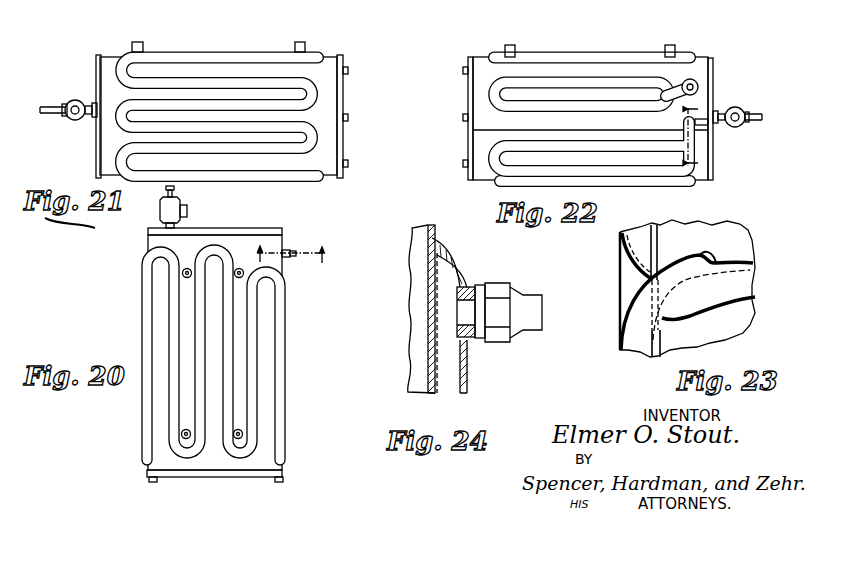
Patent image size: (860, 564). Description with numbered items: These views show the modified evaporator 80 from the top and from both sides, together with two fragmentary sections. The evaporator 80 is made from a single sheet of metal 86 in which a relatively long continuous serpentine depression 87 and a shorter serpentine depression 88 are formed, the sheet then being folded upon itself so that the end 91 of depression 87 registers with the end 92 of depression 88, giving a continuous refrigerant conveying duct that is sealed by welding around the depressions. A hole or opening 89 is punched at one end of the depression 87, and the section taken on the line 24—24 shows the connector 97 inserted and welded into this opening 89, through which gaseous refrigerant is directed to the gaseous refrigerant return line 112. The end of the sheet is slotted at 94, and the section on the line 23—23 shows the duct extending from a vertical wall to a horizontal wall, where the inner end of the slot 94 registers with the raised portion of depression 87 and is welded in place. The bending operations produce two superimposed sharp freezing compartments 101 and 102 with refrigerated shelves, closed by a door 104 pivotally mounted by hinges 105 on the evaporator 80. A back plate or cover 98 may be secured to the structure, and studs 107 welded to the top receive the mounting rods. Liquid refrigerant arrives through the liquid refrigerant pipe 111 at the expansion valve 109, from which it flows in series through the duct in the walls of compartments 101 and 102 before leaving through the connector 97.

In FIG. 22, the section line 23— 23 is at (675, 140).
In FIG. 20, the section line 24— 24 is at (291, 254).
In FIG. 21, the evaporator 80 is at (322, 68).
In FIG. 22, the evaporator 80 is at (553, 65).
In FIG. 20, the evaporator 80 is at (157, 312).
In FIG. 24, the plate or single sheet of metal 86 is at (425, 287).
In FIG. 21, the continuous serpentine depression 87 is at (248, 80).
In FIG. 22, the continuous serpentine depression 87 is at (622, 104).
In FIG. 20, the continuous serpentine depression 87 is at (172, 397).
In FIG. 24, the continuous serpentine depression 87 is at (455, 368).
In FIG. 23, the continuous serpentine depression 87 is at (622, 246).
In FIG. 23, the short continuous serpentine depression 88 is at (735, 285).
In FIG. 22, the hole or opening 89 is at (690, 79).
In FIG. 24, the hole or opening 89 is at (455, 276).
In FIG. 23, the end of depression 87 91 is at (687, 253).
In FIG. 23, the end of depression 88 92 is at (688, 325).
In FIG. 22, the slot 94 is at (700, 124).
In FIG. 23, the slot 94 is at (648, 305).
In FIG. 20, the connector 97 is at (293, 258).
In FIG. 24, the connector 97 is at (472, 286).
In FIG. 21, the back plate or cover 98 is at (97, 73).
In FIG. 22, the back plate or cover 98 is at (713, 80).
In FIG. 20, the back plate or cover 98 is at (215, 228).
In FIG. 23, the sharp freezing compartment 101 is at (732, 238).
In FIG. 23, the sharp freezing compartment 102 is at (742, 324).
In FIG. 21, the door 104 is at (343, 87).
In FIG. 22, the door 104 is at (468, 142).
In FIG. 20, the door 104 is at (233, 477).
In FIG. 21, the hinges 105 is at (347, 70).
In FIG. 22, the hinges 105 is at (466, 165).
In FIG. 20, the hinges 105 is at (282, 477).
In FIG. 21, the studs 107 is at (145, 44).
In FIG. 22, the studs 107 is at (514, 47).
In FIG. 20, the studs 107 is at (244, 432).
In FIG. 21, the expansion valve 109 is at (75, 120).
In FIG. 22, the expansion valve 109 is at (740, 127).
In FIG. 20, the expansion valve 109 is at (162, 210).
In FIG. 21, the liquid refrigerant pipe 111 is at (62, 105).
In FIG. 22, the liquid refrigerant pipe 111 is at (753, 112).
In FIG. 20, the liquid refrigerant pipe 111 is at (165, 194).
In FIG. 24, the gaseous refrigerant return line 112 is at (528, 305).